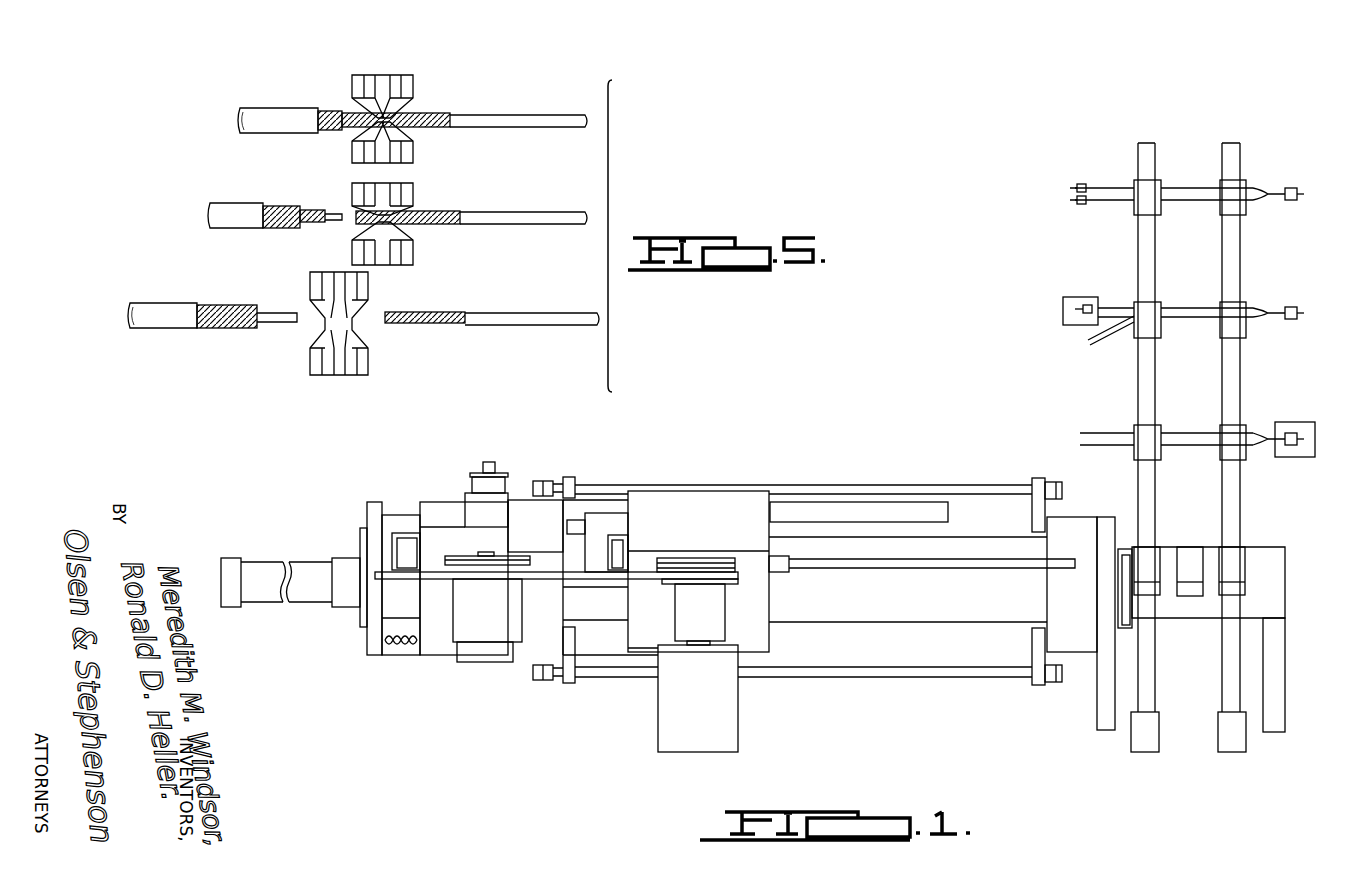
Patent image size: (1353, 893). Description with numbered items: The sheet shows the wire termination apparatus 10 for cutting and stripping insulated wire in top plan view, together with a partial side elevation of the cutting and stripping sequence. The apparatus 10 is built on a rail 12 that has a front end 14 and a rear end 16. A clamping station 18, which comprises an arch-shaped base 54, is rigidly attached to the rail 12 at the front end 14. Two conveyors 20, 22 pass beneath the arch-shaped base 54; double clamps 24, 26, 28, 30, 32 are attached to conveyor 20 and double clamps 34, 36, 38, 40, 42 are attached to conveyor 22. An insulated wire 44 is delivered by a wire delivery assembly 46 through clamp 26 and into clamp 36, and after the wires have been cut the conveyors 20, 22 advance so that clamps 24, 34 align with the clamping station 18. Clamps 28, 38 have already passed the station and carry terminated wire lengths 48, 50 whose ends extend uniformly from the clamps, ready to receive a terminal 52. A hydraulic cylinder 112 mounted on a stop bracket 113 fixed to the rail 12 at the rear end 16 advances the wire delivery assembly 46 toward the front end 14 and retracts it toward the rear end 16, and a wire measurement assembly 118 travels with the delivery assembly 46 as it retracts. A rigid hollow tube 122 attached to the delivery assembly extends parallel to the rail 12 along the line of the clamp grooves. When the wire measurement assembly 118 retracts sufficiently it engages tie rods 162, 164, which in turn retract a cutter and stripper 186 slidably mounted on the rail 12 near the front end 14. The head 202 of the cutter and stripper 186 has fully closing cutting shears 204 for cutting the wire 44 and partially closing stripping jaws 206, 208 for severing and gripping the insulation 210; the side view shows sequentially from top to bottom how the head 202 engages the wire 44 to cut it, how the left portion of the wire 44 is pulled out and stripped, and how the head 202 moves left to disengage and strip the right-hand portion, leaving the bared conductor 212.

In FIG. 1, the apparatus for cutting and stripping insulated wire 10 is at (472, 717).
In FIG. 1, the rail 12 is at (928, 628).
In FIG. 1, the front end 14 is at (1125, 628).
In FIG. 1, the rear end 16 is at (393, 602).
In FIG. 1, the clamping station 18 is at (1295, 566).
In FIG. 1, the conveyor 20 is at (1128, 162).
In FIG. 1, the conveyor 22 is at (1254, 157).
In FIG. 1, the double clamp 24 is at (1145, 745).
In FIG. 1, the double clamp 26 is at (1148, 570).
In FIG. 1, the double clamp 28 is at (1140, 432).
In FIG. 1, the double clamp 30 is at (1142, 310).
In FIG. 1, the double clamp 32 is at (1142, 208).
In FIG. 1, the double clamp 34 is at (1235, 745).
In FIG. 1, the double clamp 36 is at (1233, 570).
In FIG. 1, the double clamp 38 is at (1238, 432).
In FIG. 1, the double clamp 40 is at (1238, 312).
In FIG. 1, the double clamp 42 is at (1238, 208).
In FIG. 5, the insulated wire 44 is at (537, 115).
In FIG. 1, the insulated wire 44 is at (1082, 565).
In FIG. 1, the wire delivery assembly 46 is at (712, 490).
In FIG. 1, the wire length 48 is at (1180, 432).
In FIG. 1, the wire length 50 is at (1178, 448).
In FIG. 1, the terminal 52 is at (1300, 422).
In FIG. 1, the arch-shaped base 54 is at (1275, 603).
In FIG. 1, the hydraulic cylinder 112 is at (305, 567).
In FIG. 1, the stop bracket 113 is at (374, 658).
In FIG. 1, the wire measurement assembly 118 is at (524, 494).
In FIG. 5, the rigid hollow tube 122 is at (253, 112).
In FIG. 1, the rigid hollow tube 122 is at (952, 570).
In FIG. 1, the tie rod 162 is at (913, 677).
In FIG. 1, the tie rod 164 is at (843, 485).
In FIG. 1, the cutter and stripper 186 is at (1088, 664).
In FIG. 5, the head 202 is at (396, 202).
In FIG. 5, the cutting shears 204 is at (382, 78).
In FIG. 5, the stripping jaw 206 is at (413, 87).
In FIG. 5, the stripping jaw 208 is at (352, 84).
In FIG. 5, the insulation 210 is at (448, 130).
In FIG. 5, the conductor braid 212 is at (395, 325).